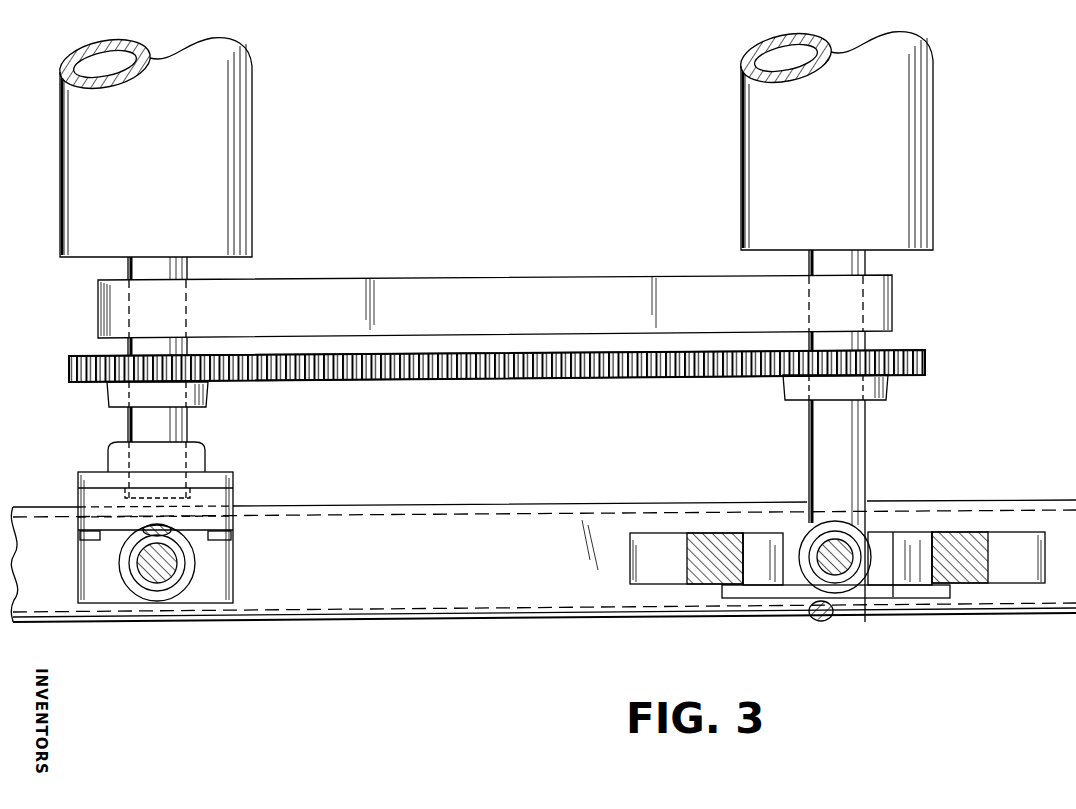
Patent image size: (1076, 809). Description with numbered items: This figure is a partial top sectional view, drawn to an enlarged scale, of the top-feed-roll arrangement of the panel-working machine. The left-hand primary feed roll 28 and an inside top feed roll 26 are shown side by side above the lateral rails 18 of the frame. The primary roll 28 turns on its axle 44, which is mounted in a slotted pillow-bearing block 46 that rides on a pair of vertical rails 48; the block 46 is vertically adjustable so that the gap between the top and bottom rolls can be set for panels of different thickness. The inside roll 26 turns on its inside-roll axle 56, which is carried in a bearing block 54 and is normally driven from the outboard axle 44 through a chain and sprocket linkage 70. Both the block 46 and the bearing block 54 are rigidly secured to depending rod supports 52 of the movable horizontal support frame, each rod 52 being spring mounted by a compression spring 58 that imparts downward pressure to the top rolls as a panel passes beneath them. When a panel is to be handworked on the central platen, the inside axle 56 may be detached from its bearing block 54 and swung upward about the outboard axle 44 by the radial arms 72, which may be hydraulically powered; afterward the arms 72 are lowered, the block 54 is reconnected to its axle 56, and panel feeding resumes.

The lateral rails 18 is at (515, 557).
The top feed roll 26 is at (159, 206).
The left-hand feed roll 28 is at (864, 190).
The axle 44 is at (838, 461).
The slotted pillow-bearing blocks 46 is at (912, 578).
The vertical rails 48 is at (728, 545).
The rod supports 52 is at (155, 572).
The bearing blocks 54 is at (203, 482).
The inside-roll axle 56 is at (147, 421).
The compression spring 58 is at (196, 565).
The chain and sprocket linkage 70 is at (481, 367).
The radial arms 72 is at (565, 297).